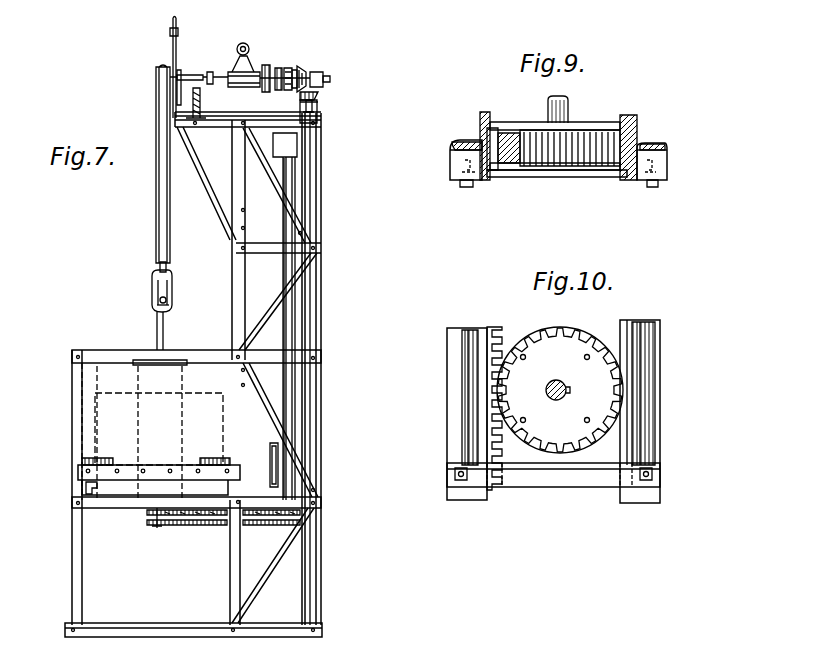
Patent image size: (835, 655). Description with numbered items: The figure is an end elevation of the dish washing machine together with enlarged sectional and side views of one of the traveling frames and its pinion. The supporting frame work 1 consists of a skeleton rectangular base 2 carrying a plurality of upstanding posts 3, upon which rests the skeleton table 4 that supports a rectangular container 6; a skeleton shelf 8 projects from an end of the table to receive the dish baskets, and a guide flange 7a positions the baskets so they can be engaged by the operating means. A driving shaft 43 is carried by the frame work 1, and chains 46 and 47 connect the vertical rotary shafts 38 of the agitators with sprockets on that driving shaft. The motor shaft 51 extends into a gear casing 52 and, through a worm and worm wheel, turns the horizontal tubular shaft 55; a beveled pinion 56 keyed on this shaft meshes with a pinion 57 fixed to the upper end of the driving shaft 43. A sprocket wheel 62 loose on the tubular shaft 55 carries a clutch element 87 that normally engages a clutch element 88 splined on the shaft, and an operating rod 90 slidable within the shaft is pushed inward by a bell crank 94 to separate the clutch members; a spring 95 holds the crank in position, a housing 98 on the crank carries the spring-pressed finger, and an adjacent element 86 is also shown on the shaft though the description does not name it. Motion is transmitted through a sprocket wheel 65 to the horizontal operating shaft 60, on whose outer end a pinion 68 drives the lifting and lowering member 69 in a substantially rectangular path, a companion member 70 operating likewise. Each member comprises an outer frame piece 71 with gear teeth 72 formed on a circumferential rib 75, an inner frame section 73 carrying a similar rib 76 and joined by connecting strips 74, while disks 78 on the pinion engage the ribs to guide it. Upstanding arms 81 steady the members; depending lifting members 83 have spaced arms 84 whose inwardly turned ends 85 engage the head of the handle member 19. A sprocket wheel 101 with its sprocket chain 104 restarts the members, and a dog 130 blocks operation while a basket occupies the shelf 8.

In FIG. 7, the supporting frame work 1 is at (65, 439).
In FIG. 7, the skeleton rectangular base 2 is at (323, 631).
In FIG. 7, the upstanding posts 3 is at (71, 408).
In FIG. 7, the skeleton table 4 is at (79, 484).
In FIG. 7, the rectangular container 6 is at (108, 385).
In FIG. 7, the guide flange 7a is at (208, 458).
In FIG. 7, the skeleton shelf 8 is at (51, 513).
In FIG. 7, the handle member 19 is at (156, 325).
In FIG. 7, the vertical rotary shaft 38 is at (159, 528).
In FIG. 7, the driving shaft 43 is at (322, 164).
In FIG. 7, the chain 46 is at (196, 527).
In FIG. 7, the chain 47 is at (182, 524).
In FIG. 7, the motor shaft 51 is at (246, 44).
In FIG. 7, the gear casing 52 is at (250, 52).
In FIG. 7, the horizontal tubular shaft 55 is at (211, 71).
In FIG. 7, the beveled pinion 56 is at (324, 76).
In FIG. 7, the pinion 57 is at (319, 102).
In FIG. 7, the horizontal operating shaft 60 is at (318, 118).
In FIG. 9, the horizontal operating shaft 60 is at (570, 110).
In FIG. 10, the horizontal operating shaft 60 is at (556, 400).
In FIG. 7, the sprocket wheel 62 is at (267, 64).
In FIG. 7, the sprocket wheel 65 is at (198, 100).
In FIG. 9, the pinion 68 is at (580, 140).
In FIG. 10, the pinion 68 is at (585, 377).
In FIG. 7, the lifting and lowering member 69 is at (155, 216).
In FIG. 10, the lifting and lowering member 69 is at (650, 332).
In FIG. 7, the lifting and lowering member 70 is at (166, 298).
In FIG. 9, the outer frame piece 71 is at (457, 140).
In FIG. 10, the outer frame piece 71 is at (460, 368).
In FIG. 9, the gear teeth 72 is at (505, 163).
In FIG. 10, the gear teeth 72 is at (496, 327).
In FIG. 9, the inner frame section 73 is at (645, 143).
In FIG. 10, the inner frame section 73 is at (645, 357).
In FIG. 9, the connecting strips 74 is at (595, 178).
In FIG. 10, the connecting strips 74 is at (552, 478).
In FIG. 9, the circumferential projection or rib 75 is at (480, 155).
In FIG. 9, the projection or rib 76 is at (668, 162).
In FIG. 9, the angular flanges or disks 78 is at (508, 122).
In FIG. 10, the angular flanges or disks 78 is at (590, 328).
In FIG. 7, the upstanding arms 81 is at (178, 32).
In FIG. 7, the basket handle engaging and lifting members 83 is at (159, 270).
In FIG. 7, the spaced arms 84 is at (169, 282).
In FIG. 7, the inwardly turned lower ends 85 is at (168, 310).
In FIG. 7, the gear 86 is at (295, 68).
In FIG. 7, the clutch element 87 is at (170, 36).
In FIG. 7, the clutch element 88 is at (288, 68).
In FIG. 7, the operating rod 90 is at (232, 72).
In FIG. 7, the bell crank 94 is at (172, 70).
In FIG. 7, the spring 95 is at (176, 86).
In FIG. 7, the housing 98 is at (304, 67).
In FIG. 7, the sprocket wheel 101 is at (296, 186).
In FIG. 7, the sprocket chain 104 is at (283, 400).
In FIG. 7, the dog 130 is at (280, 450).